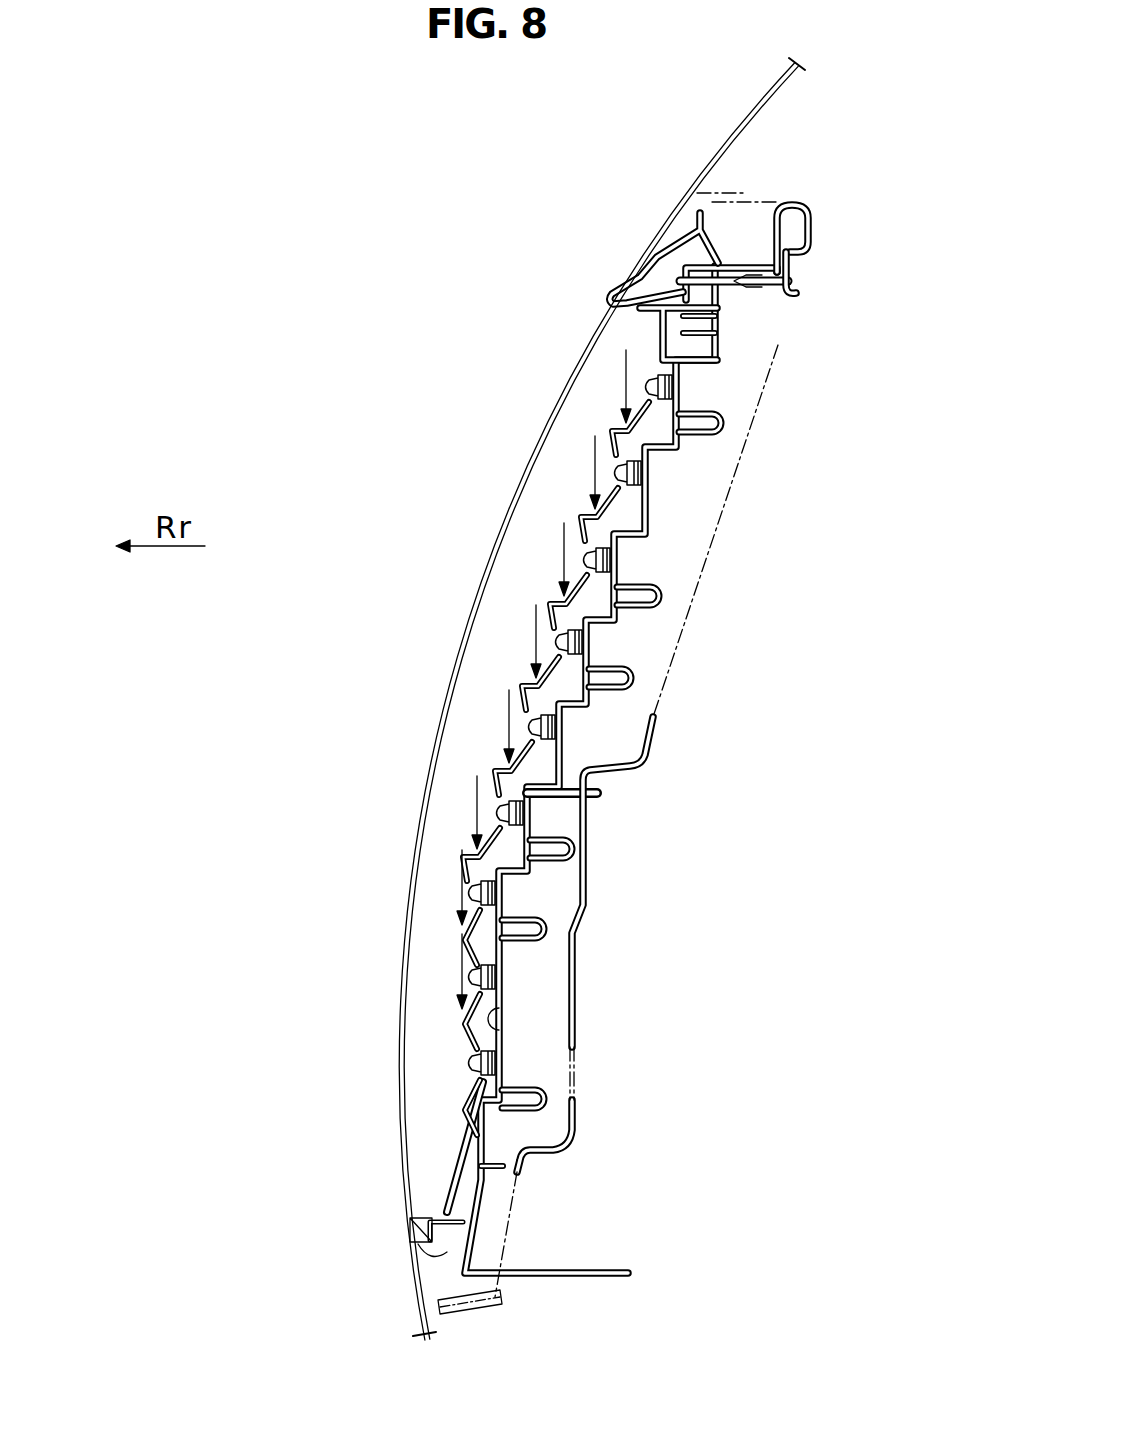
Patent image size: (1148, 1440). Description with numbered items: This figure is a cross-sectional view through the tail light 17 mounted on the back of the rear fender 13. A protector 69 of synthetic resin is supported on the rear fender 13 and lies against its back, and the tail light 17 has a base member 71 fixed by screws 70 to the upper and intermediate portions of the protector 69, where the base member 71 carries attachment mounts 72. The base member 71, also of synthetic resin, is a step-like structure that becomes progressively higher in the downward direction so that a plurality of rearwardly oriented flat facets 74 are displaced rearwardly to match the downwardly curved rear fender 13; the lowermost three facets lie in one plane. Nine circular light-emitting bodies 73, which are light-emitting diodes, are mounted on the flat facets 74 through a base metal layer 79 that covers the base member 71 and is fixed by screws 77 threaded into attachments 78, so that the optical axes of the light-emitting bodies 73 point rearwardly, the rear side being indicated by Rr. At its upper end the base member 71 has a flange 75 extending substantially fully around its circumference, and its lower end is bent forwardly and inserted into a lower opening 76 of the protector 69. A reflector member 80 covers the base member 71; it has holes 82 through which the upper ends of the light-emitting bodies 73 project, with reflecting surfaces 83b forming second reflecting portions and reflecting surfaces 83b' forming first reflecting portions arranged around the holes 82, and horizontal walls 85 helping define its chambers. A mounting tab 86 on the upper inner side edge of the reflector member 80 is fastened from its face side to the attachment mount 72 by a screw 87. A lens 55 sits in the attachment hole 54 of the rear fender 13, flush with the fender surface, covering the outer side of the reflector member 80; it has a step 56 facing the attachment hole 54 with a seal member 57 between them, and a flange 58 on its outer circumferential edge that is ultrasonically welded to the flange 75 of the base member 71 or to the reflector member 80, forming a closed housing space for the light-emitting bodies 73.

The rear fender 13 is at (752, 103).
The tail light 17 is at (510, 219).
The attachment hole 54 is at (410, 1222).
The lens 55 is at (612, 408).
The step 56 is at (420, 1210).
The seal member 57 is at (405, 1246).
The flange 58 is at (698, 212).
The protector 69 is at (765, 395).
The screw 70 is at (800, 285).
The base member 71 is at (722, 247).
The attachment mount 72 is at (814, 238).
The light-emitting body 73 is at (623, 360).
The flat facet 74 is at (607, 497).
The flange 75 is at (733, 202).
The lower opening 76 is at (510, 1222).
The screw 77 is at (735, 450).
The attachment 78 is at (718, 420).
The base metal layer 79 is at (700, 393).
The reflector member 80 is at (464, 1115).
The hole 82 is at (655, 362).
The reflecting surface (second reflecting portion) 83b is at (438, 667).
The reflecting surface (first reflecting portion) 83b' is at (407, 740).
The horizontal wall 85 is at (580, 517).
The mounting tab 86 is at (668, 302).
The screw 87 is at (688, 322).